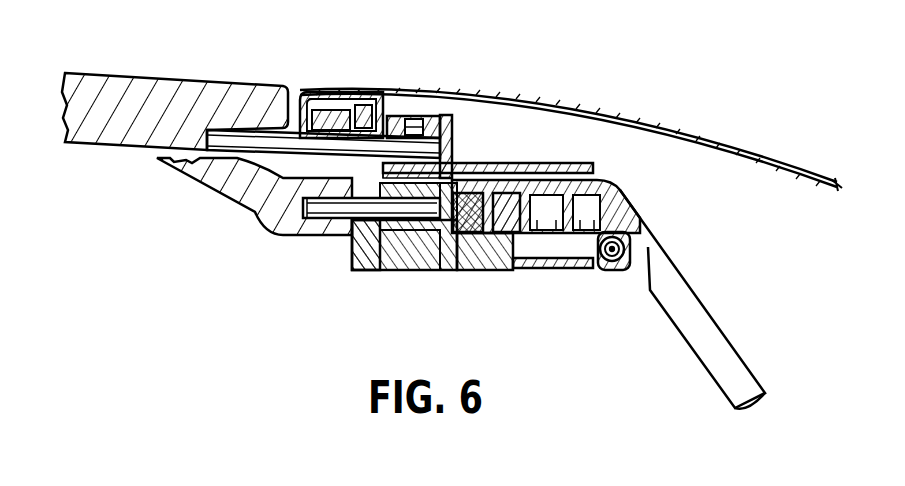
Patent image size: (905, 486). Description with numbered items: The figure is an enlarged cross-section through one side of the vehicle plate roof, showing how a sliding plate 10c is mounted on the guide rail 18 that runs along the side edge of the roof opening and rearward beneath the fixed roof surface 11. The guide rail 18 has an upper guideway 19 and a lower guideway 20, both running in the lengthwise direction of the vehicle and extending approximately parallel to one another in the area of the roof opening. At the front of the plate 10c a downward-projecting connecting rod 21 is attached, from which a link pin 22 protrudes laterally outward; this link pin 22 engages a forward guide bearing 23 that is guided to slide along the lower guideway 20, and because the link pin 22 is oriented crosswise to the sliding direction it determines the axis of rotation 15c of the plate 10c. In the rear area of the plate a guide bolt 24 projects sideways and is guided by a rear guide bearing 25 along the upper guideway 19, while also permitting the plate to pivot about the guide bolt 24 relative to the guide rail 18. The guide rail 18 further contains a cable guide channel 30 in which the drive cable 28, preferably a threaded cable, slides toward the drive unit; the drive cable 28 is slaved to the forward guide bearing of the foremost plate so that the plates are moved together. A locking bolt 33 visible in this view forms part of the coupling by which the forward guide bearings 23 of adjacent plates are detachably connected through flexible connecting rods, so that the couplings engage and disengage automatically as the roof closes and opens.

The sliding plate 10c is at (172, 110).
The fixed roof surface 11 is at (583, 108).
The axis of rotation 15c is at (362, 262).
The guide rail 18 is at (448, 138).
The upper guideway 19 is at (410, 126).
The lower guideway 20 is at (396, 262).
The connecting rod 21 is at (262, 200).
The link pin 22 is at (333, 216).
The forward guide bearing 23 is at (424, 256).
The guide bolt 24 is at (291, 145).
The rear guide bearing 25 is at (414, 130).
The drive cable 28 is at (620, 275).
The cable guide channel 30 is at (625, 250).
The locking bolt 33 is at (508, 234).